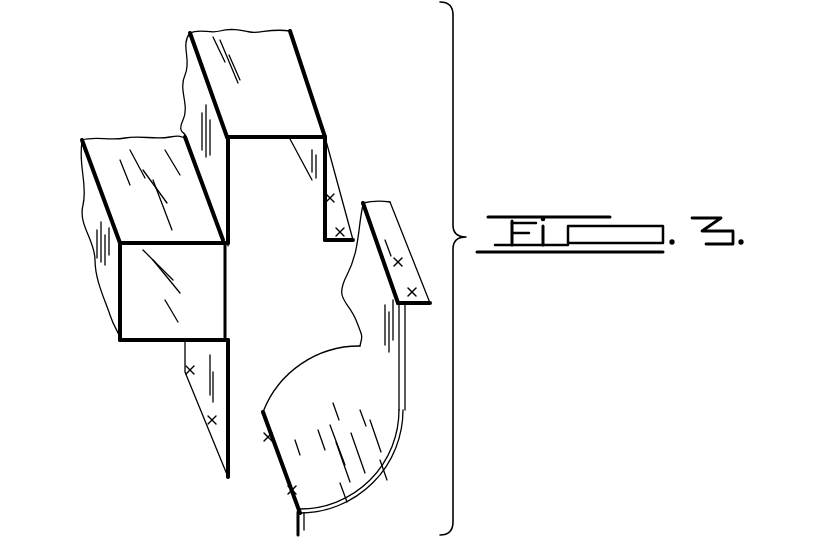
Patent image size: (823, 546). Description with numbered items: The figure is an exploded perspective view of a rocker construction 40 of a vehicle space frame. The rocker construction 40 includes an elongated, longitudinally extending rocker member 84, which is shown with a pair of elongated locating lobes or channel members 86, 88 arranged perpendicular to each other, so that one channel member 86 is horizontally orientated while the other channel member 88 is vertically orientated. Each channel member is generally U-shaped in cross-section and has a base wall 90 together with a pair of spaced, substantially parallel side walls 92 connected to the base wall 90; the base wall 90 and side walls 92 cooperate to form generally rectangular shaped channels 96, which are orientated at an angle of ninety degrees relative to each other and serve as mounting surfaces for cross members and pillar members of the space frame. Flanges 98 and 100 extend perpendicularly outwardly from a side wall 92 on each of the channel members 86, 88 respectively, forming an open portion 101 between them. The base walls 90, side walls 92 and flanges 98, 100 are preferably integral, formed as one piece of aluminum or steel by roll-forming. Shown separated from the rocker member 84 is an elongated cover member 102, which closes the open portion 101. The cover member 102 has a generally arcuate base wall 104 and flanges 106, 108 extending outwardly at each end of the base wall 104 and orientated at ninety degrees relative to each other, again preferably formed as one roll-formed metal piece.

The rocker construction 40 is at (96, 60).
The rocker member 84 is at (153, 131).
The channel member 86 is at (85, 177).
The channel member 88 is at (273, 62).
The base wall 90 is at (255, 137).
The side walls 92 is at (320, 212).
The channels 96 is at (278, 168).
The flange 98 is at (227, 370).
The flange 100 is at (343, 250).
The open portion 101 is at (305, 332).
The cover member 102 is at (376, 494).
The base wall 104 is at (405, 390).
The flange 106 is at (305, 530).
The flange 108 is at (407, 290).